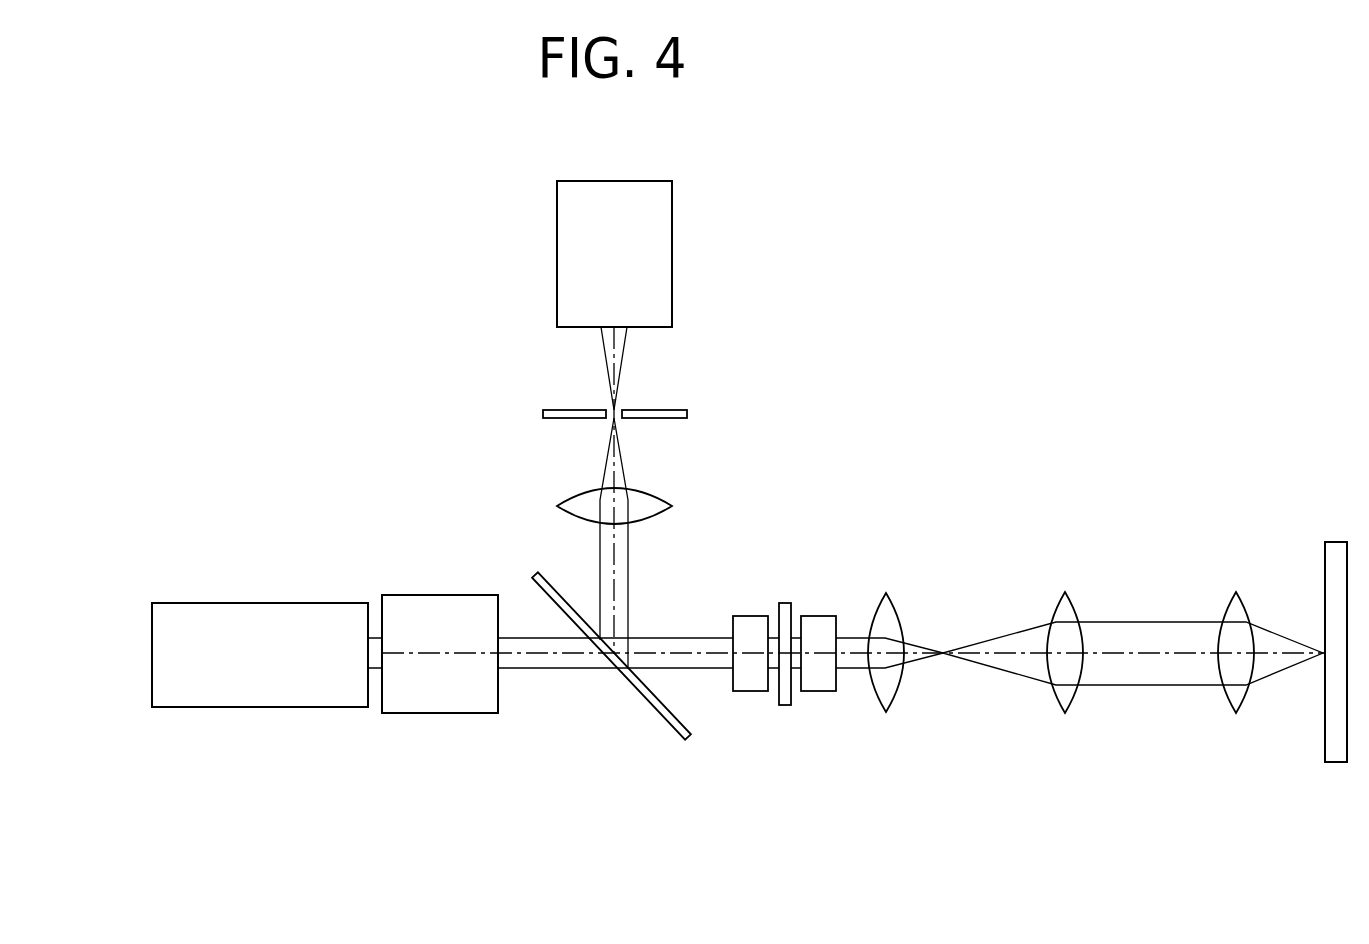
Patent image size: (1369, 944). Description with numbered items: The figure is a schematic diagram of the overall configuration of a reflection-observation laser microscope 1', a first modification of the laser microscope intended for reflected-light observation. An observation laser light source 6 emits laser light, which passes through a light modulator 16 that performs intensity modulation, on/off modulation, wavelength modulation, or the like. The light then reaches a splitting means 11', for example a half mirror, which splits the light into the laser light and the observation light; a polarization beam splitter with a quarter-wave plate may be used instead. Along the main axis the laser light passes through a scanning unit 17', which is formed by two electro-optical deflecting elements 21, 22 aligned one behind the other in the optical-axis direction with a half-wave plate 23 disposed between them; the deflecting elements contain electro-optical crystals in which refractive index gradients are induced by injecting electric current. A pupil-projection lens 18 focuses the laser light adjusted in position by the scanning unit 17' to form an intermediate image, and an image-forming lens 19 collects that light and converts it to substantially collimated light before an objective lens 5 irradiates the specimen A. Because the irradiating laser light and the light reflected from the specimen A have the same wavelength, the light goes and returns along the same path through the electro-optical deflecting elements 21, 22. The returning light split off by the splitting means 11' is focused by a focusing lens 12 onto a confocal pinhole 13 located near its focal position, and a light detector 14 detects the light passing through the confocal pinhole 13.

The reflection-observation laser microscope 1' is at (751, 532).
The light detector 14 is at (557, 290).
The confocal pinhole 13 is at (687, 412).
The focusing lens 12 is at (557, 506).
The observation laser light source 6 is at (267, 707).
The light modulator 16 is at (438, 713).
The splitting means 11' is at (611, 687).
The scanning unit 17' is at (787, 702).
The electro-optical deflecting element 21 is at (750, 616).
The half-wave plate 23 is at (782, 603).
The electro-optical deflecting element 22 is at (818, 616).
The pupil-projection lens 18 is at (886, 712).
The image-forming lens 19 is at (1065, 713).
The objective lens 5 is at (1236, 713).
The specimen A is at (1343, 762).